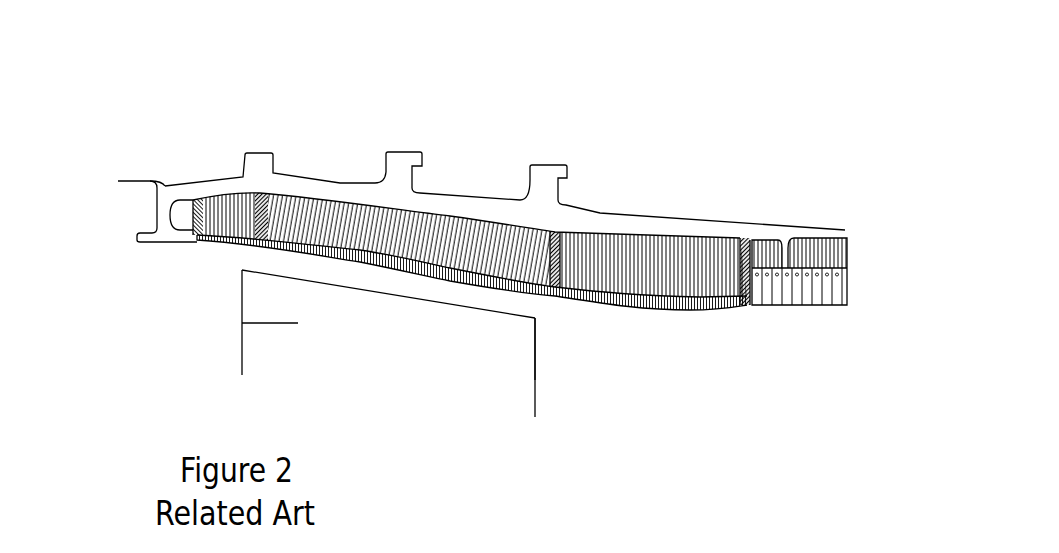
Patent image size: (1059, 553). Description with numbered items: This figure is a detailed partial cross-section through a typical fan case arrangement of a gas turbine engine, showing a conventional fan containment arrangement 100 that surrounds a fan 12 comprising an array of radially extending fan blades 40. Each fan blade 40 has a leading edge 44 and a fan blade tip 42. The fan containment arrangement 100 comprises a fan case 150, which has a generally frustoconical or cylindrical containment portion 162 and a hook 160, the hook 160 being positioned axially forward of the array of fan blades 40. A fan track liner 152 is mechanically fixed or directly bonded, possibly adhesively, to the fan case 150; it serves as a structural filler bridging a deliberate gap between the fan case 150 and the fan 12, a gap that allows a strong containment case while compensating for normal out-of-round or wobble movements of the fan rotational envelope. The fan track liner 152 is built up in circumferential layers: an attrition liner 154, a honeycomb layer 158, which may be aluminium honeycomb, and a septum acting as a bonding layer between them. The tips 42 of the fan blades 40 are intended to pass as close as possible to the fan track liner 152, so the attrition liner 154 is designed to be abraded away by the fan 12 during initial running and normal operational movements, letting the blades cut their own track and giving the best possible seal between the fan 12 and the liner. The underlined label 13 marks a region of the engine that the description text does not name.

The fan containment arrangement 100 is at (440, 113).
The containment portion 162 is at (455, 207).
The hook 160 is at (167, 220).
The fan case 150 is at (625, 227).
The honeycomb layer 158 is at (375, 236).
The fan track liner 152 is at (648, 275).
The fan blade tip 42 is at (307, 262).
The leading edge 44 is at (226, 292).
The fan blade 40 is at (242, 323).
The fan 12 is at (185, 345).
The attrition liner 154 is at (452, 300).
The turbine section 13 is at (798, 388).